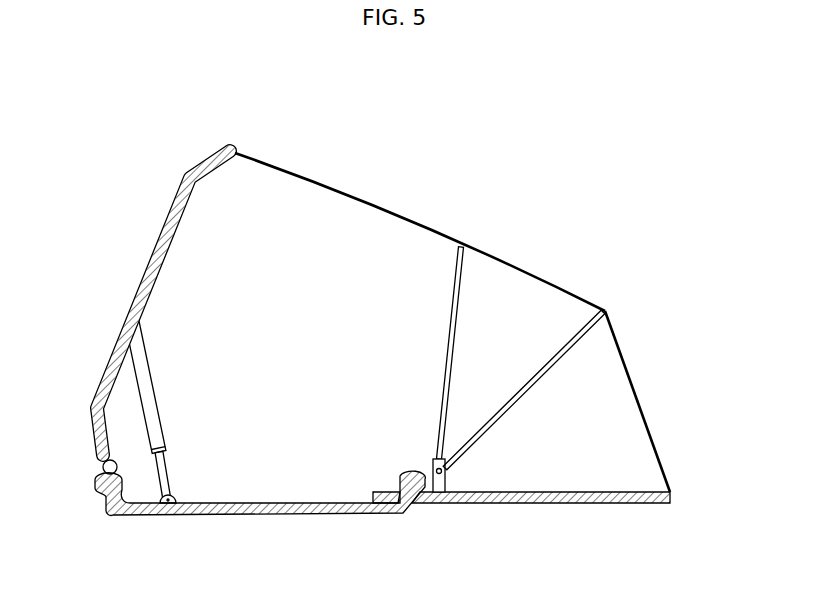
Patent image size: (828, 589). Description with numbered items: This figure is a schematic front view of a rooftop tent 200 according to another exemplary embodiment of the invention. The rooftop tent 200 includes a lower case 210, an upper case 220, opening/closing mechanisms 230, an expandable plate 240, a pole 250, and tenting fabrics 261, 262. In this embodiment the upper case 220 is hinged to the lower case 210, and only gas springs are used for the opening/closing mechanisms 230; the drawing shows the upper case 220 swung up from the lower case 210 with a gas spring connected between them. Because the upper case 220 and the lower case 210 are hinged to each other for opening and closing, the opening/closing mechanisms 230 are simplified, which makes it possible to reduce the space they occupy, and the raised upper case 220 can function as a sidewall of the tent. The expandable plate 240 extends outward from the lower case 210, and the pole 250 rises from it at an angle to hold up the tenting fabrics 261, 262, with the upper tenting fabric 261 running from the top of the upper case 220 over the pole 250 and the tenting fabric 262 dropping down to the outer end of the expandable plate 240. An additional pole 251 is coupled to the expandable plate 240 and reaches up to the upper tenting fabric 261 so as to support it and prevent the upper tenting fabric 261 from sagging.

The rooftop tent 200 is at (112, 118).
The lower case 210 is at (183, 515).
The upper case 220 is at (201, 164).
The opening/closing mechanisms 230 is at (157, 432).
The expandable plate 240 is at (567, 503).
The pole 250 is at (555, 358).
The additional pole 251 is at (462, 243).
The upper tenting fabric 261 is at (516, 268).
The tenting fabric 262 is at (643, 405).